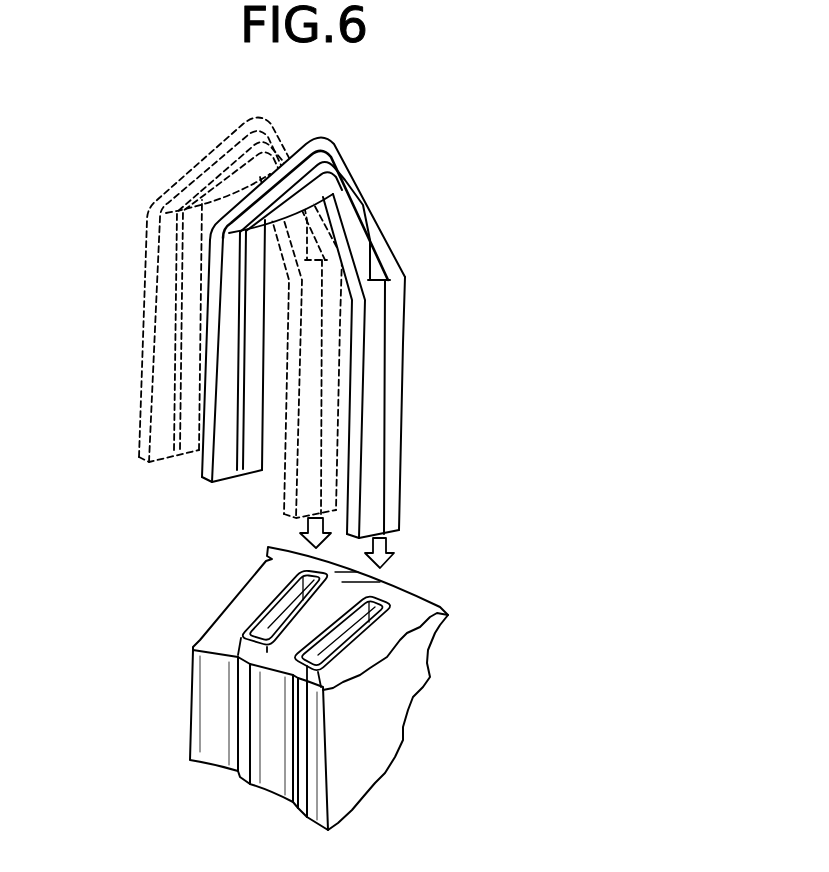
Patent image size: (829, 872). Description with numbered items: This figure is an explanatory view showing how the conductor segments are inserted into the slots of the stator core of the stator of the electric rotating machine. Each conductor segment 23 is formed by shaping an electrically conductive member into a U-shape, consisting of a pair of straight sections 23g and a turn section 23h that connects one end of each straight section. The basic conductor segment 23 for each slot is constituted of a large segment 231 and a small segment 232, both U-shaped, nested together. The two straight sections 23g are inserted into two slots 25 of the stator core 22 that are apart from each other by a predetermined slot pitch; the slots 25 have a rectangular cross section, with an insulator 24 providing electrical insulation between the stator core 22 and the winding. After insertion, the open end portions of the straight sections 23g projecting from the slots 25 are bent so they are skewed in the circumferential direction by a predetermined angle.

The stator core 22 is at (423, 613).
The conductor segment 23 is at (212, 180).
The straight sections 23g is at (252, 423).
The turn section 23h is at (339, 160).
The large segment 231 is at (404, 310).
The small segment 232 is at (385, 362).
The insulator 24 is at (367, 642).
The slots 25 is at (238, 715).